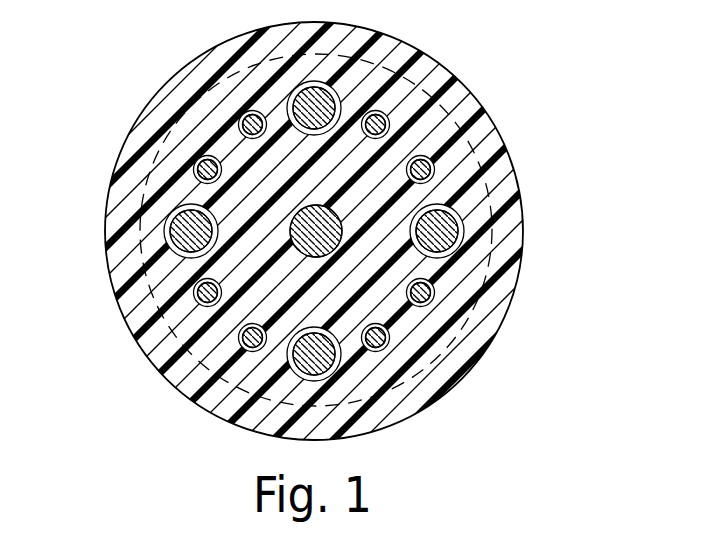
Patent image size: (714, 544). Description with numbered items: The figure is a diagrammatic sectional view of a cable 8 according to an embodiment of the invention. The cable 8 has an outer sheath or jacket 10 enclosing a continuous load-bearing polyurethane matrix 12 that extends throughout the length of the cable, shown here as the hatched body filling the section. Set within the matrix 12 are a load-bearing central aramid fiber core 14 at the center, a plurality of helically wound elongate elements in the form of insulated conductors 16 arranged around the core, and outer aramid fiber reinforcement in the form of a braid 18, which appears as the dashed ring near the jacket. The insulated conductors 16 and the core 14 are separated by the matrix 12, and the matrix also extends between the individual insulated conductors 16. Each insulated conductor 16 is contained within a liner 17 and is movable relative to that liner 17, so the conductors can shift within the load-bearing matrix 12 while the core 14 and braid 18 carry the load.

The cable 8 is at (357, 272).
The outer sheath or jacket 10 is at (498, 131).
The load-bearing polyurethane matrix 12 is at (463, 290).
The central aramid fiber core 14 is at (313, 223).
The insulated conductors 16 is at (168, 248).
The liners 17 is at (194, 171).
The braid 18 is at (175, 342).